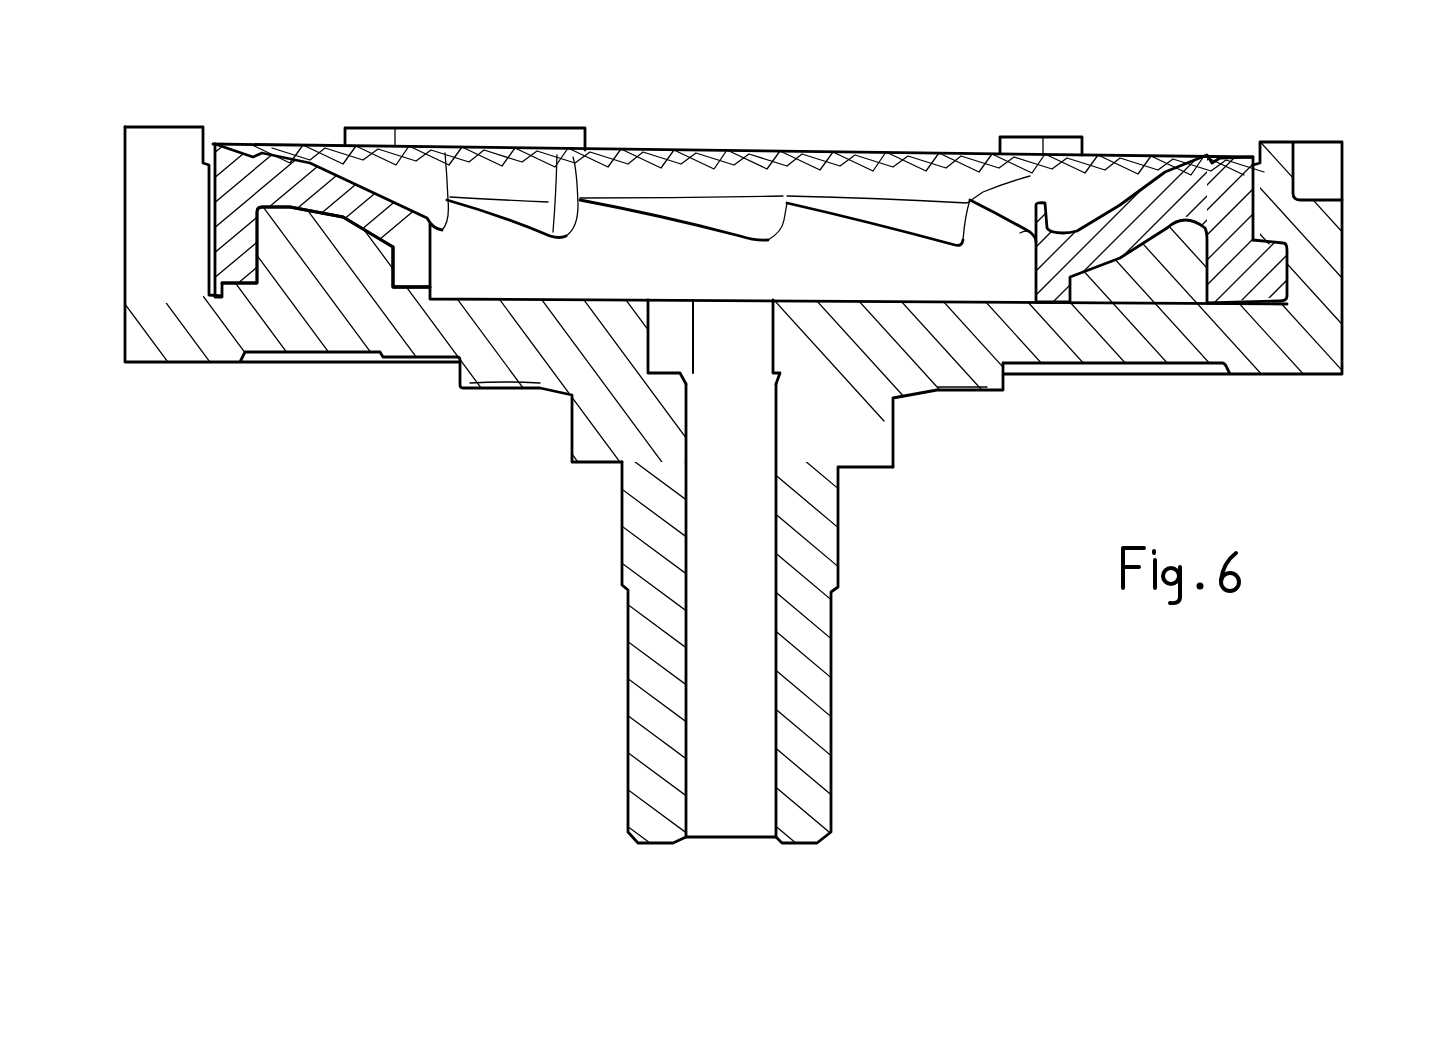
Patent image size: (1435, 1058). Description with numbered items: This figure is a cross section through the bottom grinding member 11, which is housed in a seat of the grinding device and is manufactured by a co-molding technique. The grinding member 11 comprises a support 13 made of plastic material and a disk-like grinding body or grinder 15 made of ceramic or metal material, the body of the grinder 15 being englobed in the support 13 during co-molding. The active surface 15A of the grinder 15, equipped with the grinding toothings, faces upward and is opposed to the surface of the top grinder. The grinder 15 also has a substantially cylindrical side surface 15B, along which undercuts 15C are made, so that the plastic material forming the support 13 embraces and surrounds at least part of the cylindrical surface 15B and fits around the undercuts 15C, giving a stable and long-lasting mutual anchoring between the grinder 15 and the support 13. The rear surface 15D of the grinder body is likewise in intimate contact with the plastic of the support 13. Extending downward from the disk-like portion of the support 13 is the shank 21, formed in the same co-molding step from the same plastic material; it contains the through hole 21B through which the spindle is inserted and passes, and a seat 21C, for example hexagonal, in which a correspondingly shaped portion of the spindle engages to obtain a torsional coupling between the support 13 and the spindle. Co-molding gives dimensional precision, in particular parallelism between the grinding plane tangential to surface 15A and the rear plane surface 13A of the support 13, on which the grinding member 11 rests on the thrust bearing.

The second grinding member 11 is at (1095, 392).
The support 13 is at (1265, 352).
The rear plane surface 13A is at (383, 360).
The grinder 15 is at (640, 180).
The active surface 15A is at (785, 160).
The cylindrical side surface 15B is at (1260, 226).
The undercuts 15C is at (1290, 268).
The rear surface 15D is at (326, 249).
The shank 21 is at (822, 575).
The through hole 21B is at (678, 697).
The seat 21C is at (647, 340).